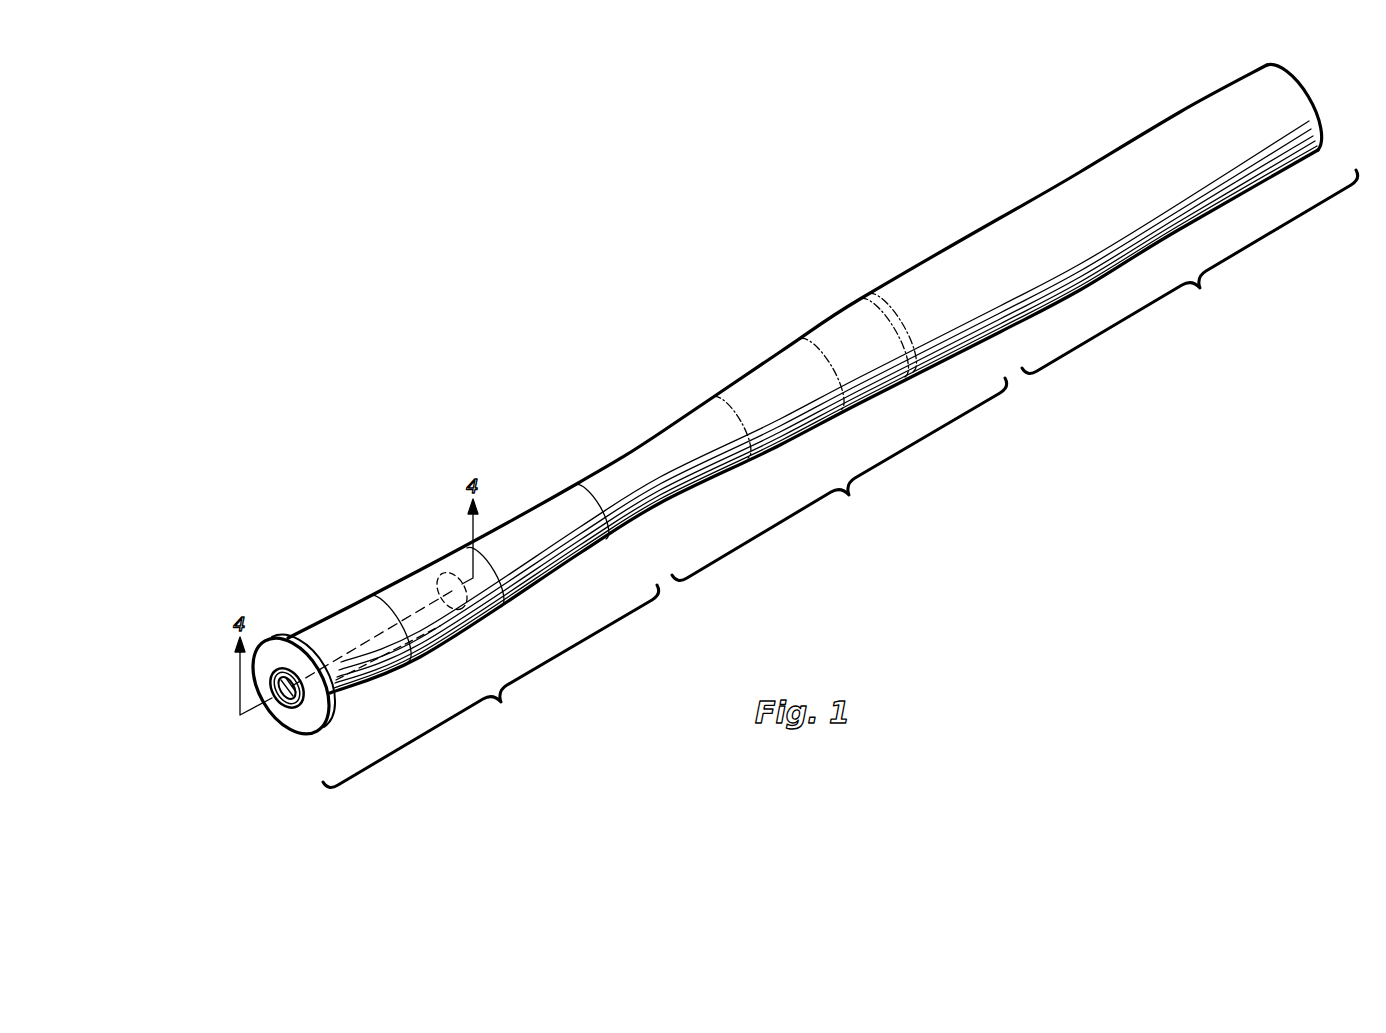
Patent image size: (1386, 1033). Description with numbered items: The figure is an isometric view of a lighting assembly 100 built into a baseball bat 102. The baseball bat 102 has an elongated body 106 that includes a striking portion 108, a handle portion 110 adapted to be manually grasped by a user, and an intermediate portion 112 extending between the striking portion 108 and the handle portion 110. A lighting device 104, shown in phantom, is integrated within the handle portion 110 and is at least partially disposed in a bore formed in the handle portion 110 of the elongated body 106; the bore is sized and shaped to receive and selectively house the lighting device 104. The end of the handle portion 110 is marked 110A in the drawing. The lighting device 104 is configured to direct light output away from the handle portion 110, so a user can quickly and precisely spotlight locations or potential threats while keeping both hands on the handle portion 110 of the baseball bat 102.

The lighting assembly 100 is at (335, 332).
The baseball bat 102 is at (914, 172).
The lighting device 104 is at (363, 632).
The elongated body 106 is at (826, 310).
The striking portion 108 is at (1190, 271).
The handle portion 110 is at (491, 686).
The knob end of handle 110A is at (290, 718).
The intermediate portion 112 is at (791, 479).